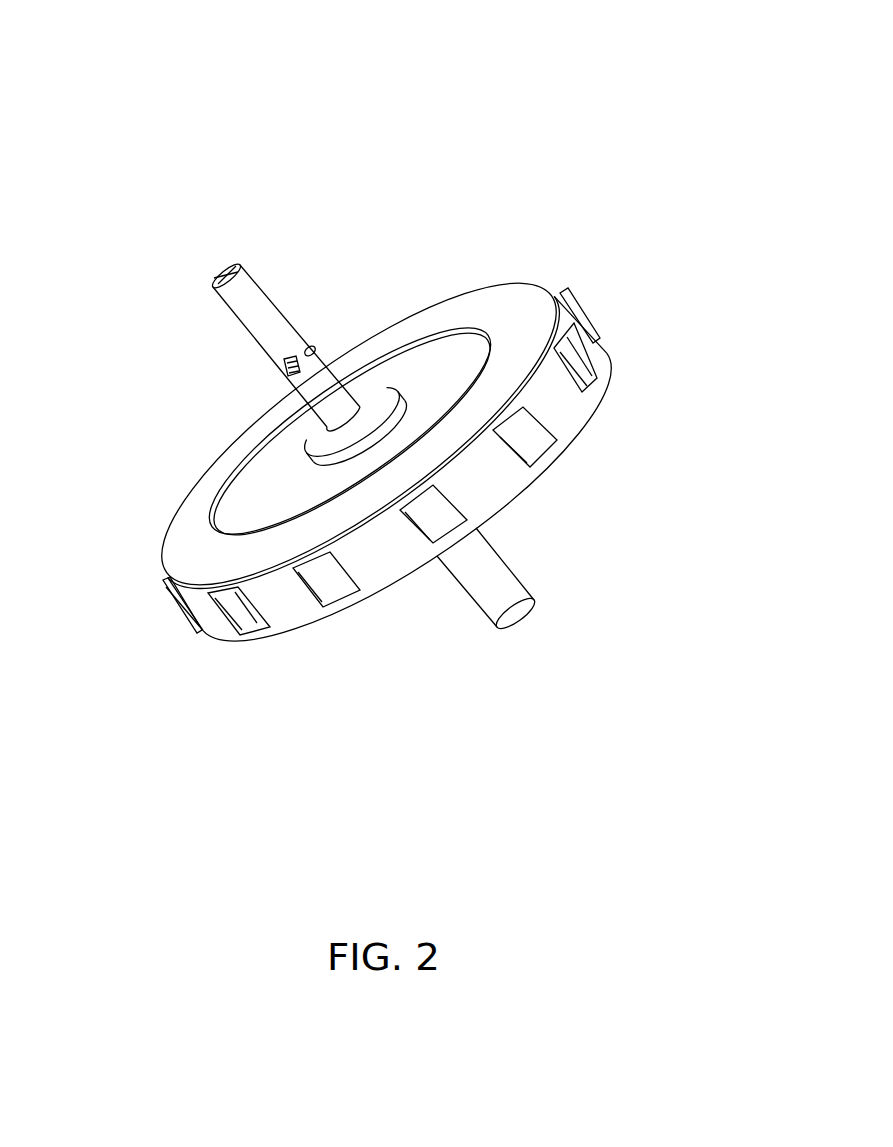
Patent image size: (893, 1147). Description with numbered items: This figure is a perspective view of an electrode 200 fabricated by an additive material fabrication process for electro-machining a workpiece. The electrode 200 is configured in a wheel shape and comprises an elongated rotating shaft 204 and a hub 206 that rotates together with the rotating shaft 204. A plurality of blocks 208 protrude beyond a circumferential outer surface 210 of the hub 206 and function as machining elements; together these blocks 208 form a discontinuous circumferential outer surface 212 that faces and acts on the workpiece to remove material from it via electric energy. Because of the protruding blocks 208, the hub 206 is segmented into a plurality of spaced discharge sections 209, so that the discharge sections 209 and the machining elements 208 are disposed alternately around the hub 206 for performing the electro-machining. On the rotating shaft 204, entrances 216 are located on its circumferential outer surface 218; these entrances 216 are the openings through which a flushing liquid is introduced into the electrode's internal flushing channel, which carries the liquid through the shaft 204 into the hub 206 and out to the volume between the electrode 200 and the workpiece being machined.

The electrode 200 is at (566, 123).
The rotating shaft 204 is at (262, 310).
The hub 206 is at (503, 300).
The blocks 208 is at (547, 427).
The discharge sections 209 is at (560, 390).
The circumferential outer surface 210 is at (483, 503).
The discontinuous circumferential outer surface 212 is at (328, 593).
The entrances 216 is at (307, 348).
The circumferential outer surface 218 is at (280, 352).